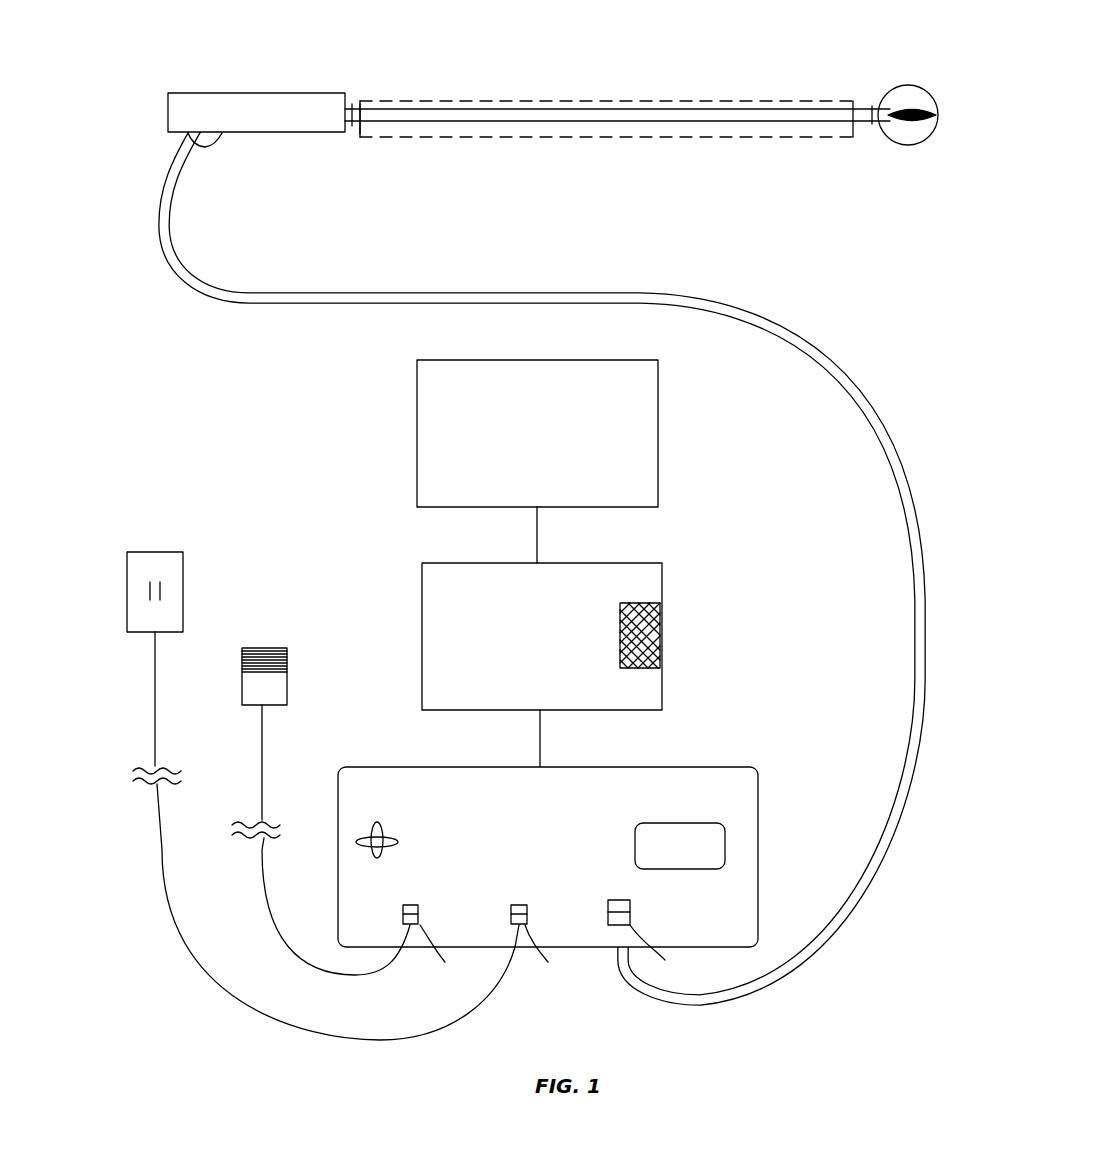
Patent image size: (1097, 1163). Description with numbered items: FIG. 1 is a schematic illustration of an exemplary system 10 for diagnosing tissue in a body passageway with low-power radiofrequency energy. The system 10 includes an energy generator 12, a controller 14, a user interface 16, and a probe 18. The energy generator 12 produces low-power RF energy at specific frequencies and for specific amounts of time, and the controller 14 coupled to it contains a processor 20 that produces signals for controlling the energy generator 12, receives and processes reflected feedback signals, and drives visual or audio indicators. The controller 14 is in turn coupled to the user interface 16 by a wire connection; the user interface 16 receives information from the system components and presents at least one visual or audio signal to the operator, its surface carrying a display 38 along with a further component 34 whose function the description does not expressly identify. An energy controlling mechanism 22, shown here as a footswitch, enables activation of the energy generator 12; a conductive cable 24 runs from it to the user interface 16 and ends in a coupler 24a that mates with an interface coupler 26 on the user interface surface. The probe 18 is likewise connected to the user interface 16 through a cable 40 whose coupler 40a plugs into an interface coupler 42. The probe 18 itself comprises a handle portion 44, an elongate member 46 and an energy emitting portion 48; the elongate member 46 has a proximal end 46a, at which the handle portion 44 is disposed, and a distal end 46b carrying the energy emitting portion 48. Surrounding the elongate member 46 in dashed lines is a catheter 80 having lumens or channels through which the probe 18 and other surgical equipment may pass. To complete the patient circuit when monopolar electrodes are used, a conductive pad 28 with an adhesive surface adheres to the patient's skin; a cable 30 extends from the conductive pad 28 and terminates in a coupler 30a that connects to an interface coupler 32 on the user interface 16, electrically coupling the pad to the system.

The system 10 is at (126, 164).
The energy generator 12 is at (417, 432).
The controller 14 is at (422, 638).
The user interface 16 is at (377, 766).
The probe 18 is at (414, 129).
The processor 20 is at (664, 633).
The energy controlling mechanism 22 is at (158, 552).
The conductive cable 24 is at (155, 692).
The coupler 24a is at (553, 952).
The interface coupler 26 is at (520, 905).
The conductive pad 28 is at (265, 648).
The cable 30 is at (262, 742).
The coupler 30a is at (448, 952).
The interface coupler 32 is at (403, 912).
The pump 34 is at (356, 841).
The display 38 is at (725, 846).
The cable 40 is at (797, 334).
The coupler 40a is at (665, 951).
The interface coupler 42 is at (607, 903).
The handle portion 44 is at (250, 93).
The elongate member 46 is at (545, 108).
The proximal end 46a is at (352, 106).
The distal end 46b is at (872, 108).
The energy emitting portion 48 is at (893, 130).
The catheter 80 is at (690, 101).